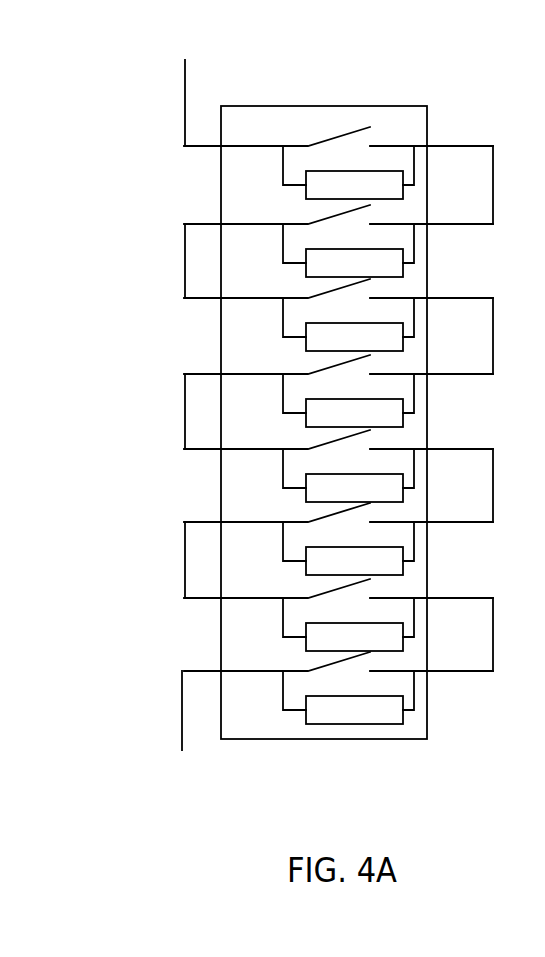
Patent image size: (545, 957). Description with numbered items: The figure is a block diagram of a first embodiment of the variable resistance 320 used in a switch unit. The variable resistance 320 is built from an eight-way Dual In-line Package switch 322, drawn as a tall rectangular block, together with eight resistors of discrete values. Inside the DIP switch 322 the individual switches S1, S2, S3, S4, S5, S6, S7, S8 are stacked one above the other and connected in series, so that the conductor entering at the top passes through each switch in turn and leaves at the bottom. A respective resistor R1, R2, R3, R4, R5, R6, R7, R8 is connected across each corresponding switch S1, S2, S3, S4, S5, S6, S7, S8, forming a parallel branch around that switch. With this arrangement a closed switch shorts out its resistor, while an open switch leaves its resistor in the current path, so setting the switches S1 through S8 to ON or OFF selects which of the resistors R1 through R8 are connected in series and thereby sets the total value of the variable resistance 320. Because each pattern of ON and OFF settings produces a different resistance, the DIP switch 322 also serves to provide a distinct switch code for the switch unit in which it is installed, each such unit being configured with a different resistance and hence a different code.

The variable resistance 320 is at (148, 140).
The Dual In-line Package (DIP) switch 322 is at (370, 739).
The switch S1 is at (338, 167).
The switch S2 is at (338, 245).
The switch S3 is at (338, 319).
The switch S4 is at (338, 395).
The switch S5 is at (338, 470).
The switch S6 is at (338, 543).
The switch S7 is at (338, 619).
The switch S8 is at (338, 692).
The resistor R1 is at (348, 173).
The resistor R2 is at (348, 251).
The resistor R3 is at (348, 325).
The resistor R4 is at (348, 401).
The resistor R5 is at (348, 476).
The resistor R6 is at (348, 549).
The resistor R7 is at (348, 625).
The resistor R8 is at (348, 698).